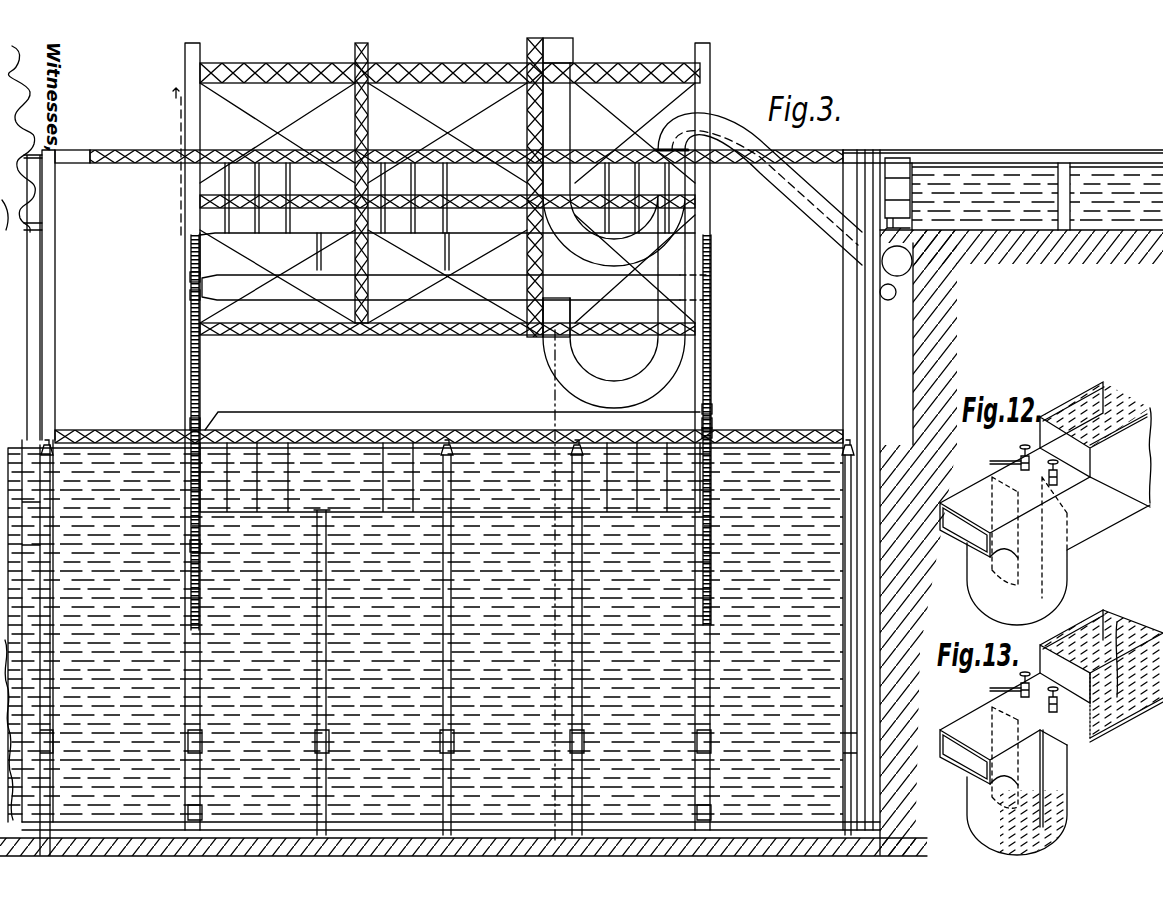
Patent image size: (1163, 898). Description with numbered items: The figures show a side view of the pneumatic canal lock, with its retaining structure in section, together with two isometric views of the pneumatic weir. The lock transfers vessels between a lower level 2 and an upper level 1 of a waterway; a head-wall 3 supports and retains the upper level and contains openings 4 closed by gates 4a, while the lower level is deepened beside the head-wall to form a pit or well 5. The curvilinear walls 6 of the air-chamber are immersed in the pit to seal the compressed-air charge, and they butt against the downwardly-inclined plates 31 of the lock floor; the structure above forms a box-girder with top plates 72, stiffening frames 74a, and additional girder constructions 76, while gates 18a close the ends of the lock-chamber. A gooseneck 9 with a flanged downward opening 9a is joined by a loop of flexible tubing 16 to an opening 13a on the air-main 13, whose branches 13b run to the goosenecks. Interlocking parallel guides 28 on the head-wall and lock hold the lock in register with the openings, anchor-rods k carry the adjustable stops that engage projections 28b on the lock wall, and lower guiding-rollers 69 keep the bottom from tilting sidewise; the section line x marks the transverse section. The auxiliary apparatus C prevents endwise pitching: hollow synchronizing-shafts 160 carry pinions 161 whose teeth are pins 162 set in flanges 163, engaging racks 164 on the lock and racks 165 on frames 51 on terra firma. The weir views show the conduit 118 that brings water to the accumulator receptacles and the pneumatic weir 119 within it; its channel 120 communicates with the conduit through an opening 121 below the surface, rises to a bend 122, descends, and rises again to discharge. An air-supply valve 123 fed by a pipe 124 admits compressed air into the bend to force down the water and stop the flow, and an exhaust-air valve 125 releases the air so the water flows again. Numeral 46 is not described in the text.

In FIG. 3, the upper level 1 is at (991, 191).
In FIG. 3, the lower level 2 is at (108, 447).
In FIG. 3, the head-wall 3 is at (1021, 541).
In FIG. 3, the openings 4 is at (1003, 149).
In FIG. 3, the gates 4a is at (897, 193).
In FIG. 3, the compartment 46 is at (1116, 197).
In FIG. 3, the pit or well 5 is at (272, 830).
In FIG. 3, the walls 6 is at (74, 486).
In FIG. 3, the goosenecks 9 is at (548, 187).
In FIG. 3, the flanged downward opening 9a is at (558, 50).
In FIG. 3, the air-main 13 is at (897, 261).
In FIG. 3, the opening 13a is at (671, 142).
In FIG. 3, the branches 13b is at (896, 306).
In FIG. 3, the loop of flexible tubing 16 is at (702, 235).
In FIG. 3, the gates 18a is at (22, 297).
In FIG. 3, the interlocking parallel guides 28 is at (876, 150).
In FIG. 3, the projections 28b is at (584, 741).
In FIG. 3, the plates 31 is at (282, 227).
In FIG. 3, the frames 51 is at (306, 63).
In FIG. 3, the lower guiding-rollers 69 is at (459, 813).
In FIG. 3, the top plates 72 is at (97, 150).
In FIG. 3, the frames 74a is at (282, 180).
In FIG. 3, the girder constructions 76 is at (57, 232).
In FIG. 3, the auxiliary apparatus C is at (216, 254).
In FIG. 3, the anchor-rods k is at (453, 481).
In FIG. 3, the section line x is at (358, 472).
In FIG. 3, the synchronizing-shafts 160 is at (456, 352).
In FIG. 3, the pinions 161 is at (190, 280).
In FIG. 3, the pins 162 is at (190, 299).
In FIG. 3, the flanges 163 is at (199, 426).
In FIG. 3, the racks 164 is at (200, 548).
In FIG. 3, the racks 165 is at (191, 256).
In FIG. 12, the channel or conduit 118 is at (1095, 429).
In FIG. 13, the channel or conduit 118 is at (1072, 656).
In FIG. 12, the pneumatic weirs 119 is at (1045, 503).
In FIG. 13, the pneumatic weirs 119 is at (1003, 740).
In FIG. 12, the pipe or channel 120 is at (1017, 584).
In FIG. 13, the pipe or channel 120 is at (1032, 800).
In FIG. 13, the opening 121 is at (1101, 683).
In FIG. 13, the bend 122 is at (1065, 750).
In FIG. 12, the air-supply valve 123 is at (1020, 448).
In FIG. 13, the air-supply valve 123 is at (1020, 676).
In FIG. 12, the pipe 124 is at (991, 462).
In FIG. 13, the pipe 124 is at (988, 694).
In FIG. 12, the exhaust-air valve 125 is at (1049, 474).
In FIG. 13, the exhaust-air valve 125 is at (1047, 700).